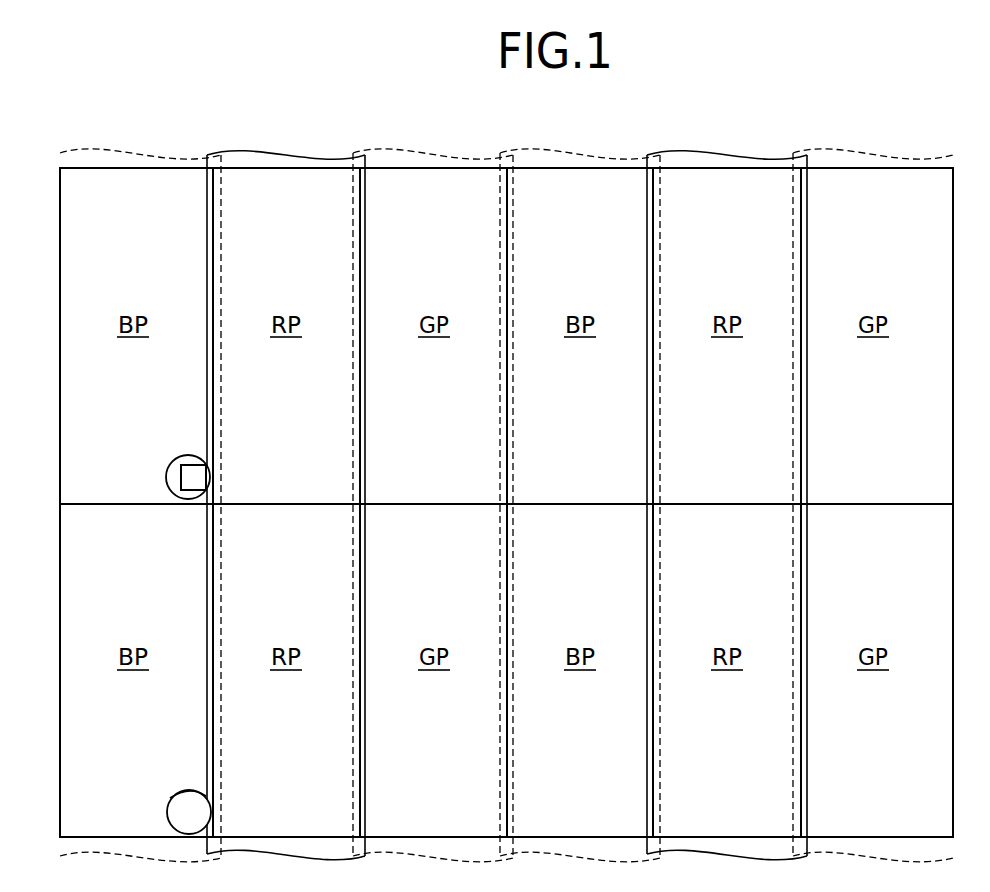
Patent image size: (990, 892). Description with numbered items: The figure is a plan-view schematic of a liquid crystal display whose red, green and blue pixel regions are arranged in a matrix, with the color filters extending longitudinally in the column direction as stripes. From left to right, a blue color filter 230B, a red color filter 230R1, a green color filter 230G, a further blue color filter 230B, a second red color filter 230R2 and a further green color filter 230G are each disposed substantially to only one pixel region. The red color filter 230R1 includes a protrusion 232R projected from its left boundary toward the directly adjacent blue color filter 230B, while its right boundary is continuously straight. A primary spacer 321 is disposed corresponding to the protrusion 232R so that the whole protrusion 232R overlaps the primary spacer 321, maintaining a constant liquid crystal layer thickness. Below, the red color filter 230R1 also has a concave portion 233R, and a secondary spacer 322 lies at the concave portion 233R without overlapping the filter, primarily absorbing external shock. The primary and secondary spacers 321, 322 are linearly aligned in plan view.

The blue color filter 230B is at (140, 148).
The red color filter 230R1 is at (287, 157).
The green color filter 230G is at (433, 150).
The red color filter 230R2 is at (730, 155).
The protrusion 232R is at (187, 465).
The concave portion 233R is at (190, 789).
The primary spacer 321 is at (166, 476).
The secondary spacer 322 is at (167, 812).